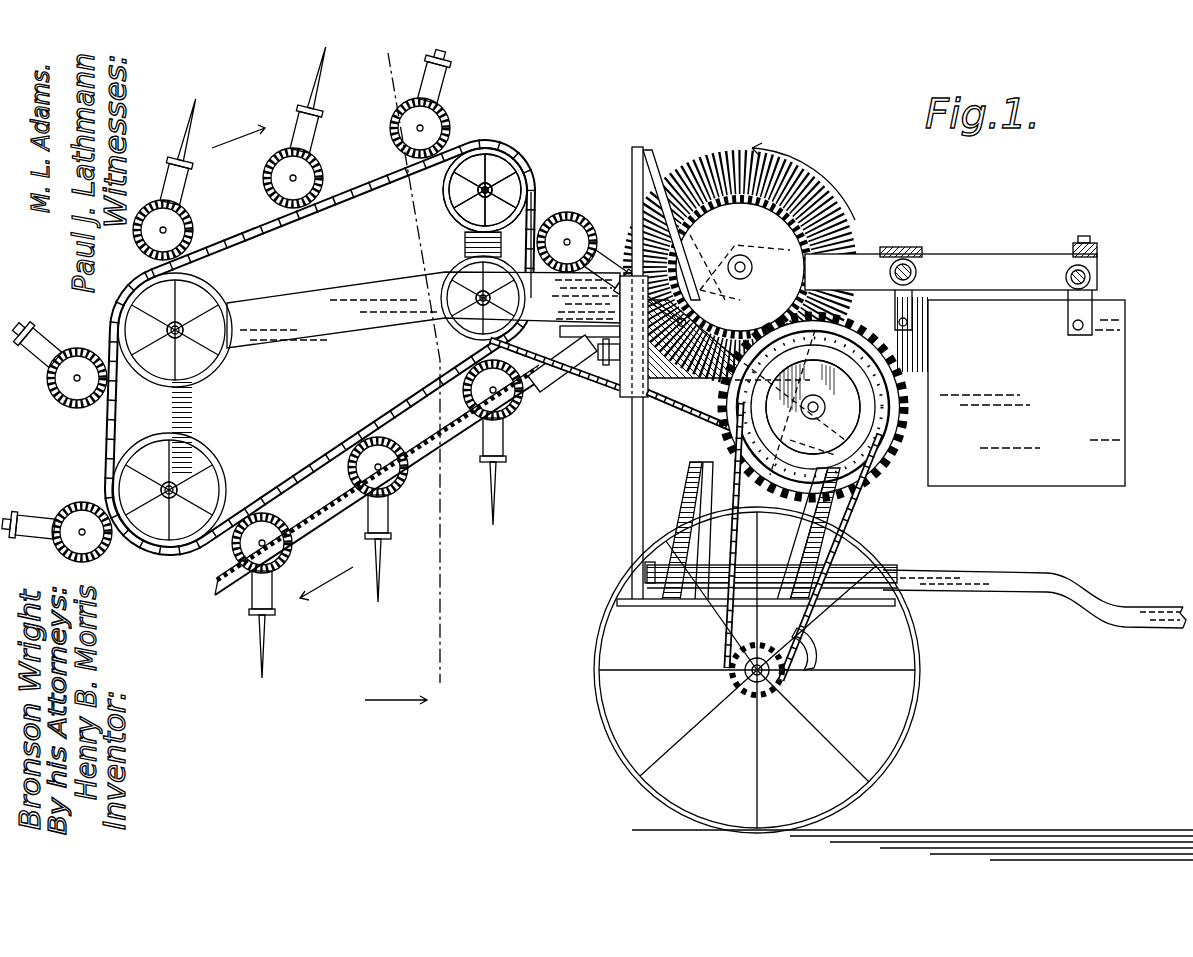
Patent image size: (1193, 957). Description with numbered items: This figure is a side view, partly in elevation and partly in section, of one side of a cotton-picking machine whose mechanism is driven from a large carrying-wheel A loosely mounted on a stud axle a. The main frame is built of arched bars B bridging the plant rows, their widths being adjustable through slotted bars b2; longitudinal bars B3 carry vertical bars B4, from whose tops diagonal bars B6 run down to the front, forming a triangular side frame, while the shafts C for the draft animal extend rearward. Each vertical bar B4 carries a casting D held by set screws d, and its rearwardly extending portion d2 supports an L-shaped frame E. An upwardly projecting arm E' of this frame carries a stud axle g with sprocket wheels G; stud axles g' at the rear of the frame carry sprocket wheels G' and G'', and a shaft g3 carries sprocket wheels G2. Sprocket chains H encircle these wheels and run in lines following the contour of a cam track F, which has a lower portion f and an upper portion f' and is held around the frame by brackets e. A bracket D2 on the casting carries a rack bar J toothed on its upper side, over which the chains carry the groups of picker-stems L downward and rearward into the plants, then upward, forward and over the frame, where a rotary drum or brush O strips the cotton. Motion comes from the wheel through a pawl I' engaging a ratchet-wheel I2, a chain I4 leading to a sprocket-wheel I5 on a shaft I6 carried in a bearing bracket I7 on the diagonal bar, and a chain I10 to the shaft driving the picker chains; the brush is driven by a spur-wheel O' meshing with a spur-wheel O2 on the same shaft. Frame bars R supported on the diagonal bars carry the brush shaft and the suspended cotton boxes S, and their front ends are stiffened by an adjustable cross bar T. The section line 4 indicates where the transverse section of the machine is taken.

The carrying-wheel A is at (893, 683).
The stud axle a is at (742, 675).
The arched bar B is at (755, 480).
The slotted bar b2 is at (690, 470).
The longitudinal bar B3 is at (660, 608).
The vertical bar B4 is at (632, 158).
The diagonal bar B6 is at (655, 185).
The shaft C is at (1034, 588).
The casting D is at (648, 365).
The bracket D2 is at (565, 370).
The set screw d is at (640, 378).
The rearwardly extending portion d2 is at (560, 330).
The L-shaped frame E is at (423, 309).
The upwardly projecting arm E' is at (461, 242).
The bracket e is at (168, 318).
The cam track F is at (275, 232).
The lower portion of cam track f is at (378, 472).
The upper portion of cam track f' is at (320, 347).
The sprocket wheel G is at (485, 175).
The sprocket-wheel G' is at (204, 397).
The sprocket-wheel G'' is at (205, 448).
The sprocket-wheel G2 is at (470, 320).
The stud axle g is at (451, 191).
The stud axle g' is at (132, 452).
The shaft g3 is at (476, 293).
The sprocket chain H is at (527, 172).
The pawl I' is at (815, 649).
The ratchet-wheel I2 is at (787, 685).
The chain I4 is at (840, 510).
The sprocket-wheel I5 is at (858, 400).
The shaft I6 is at (820, 405).
The bearing bracket I7 is at (700, 418).
The chain I10 is at (598, 388).
The rack bar J is at (330, 525).
The picker-stem L is at (235, 650).
The rotary drum O is at (793, 192).
The spur-wheel O' is at (740, 267).
The spur-wheel O2 is at (905, 345).
The frame bar R is at (1000, 262).
The box S is at (1011, 391).
The adjustable cross bar T is at (1078, 243).
The section line 4 is at (326, 378).